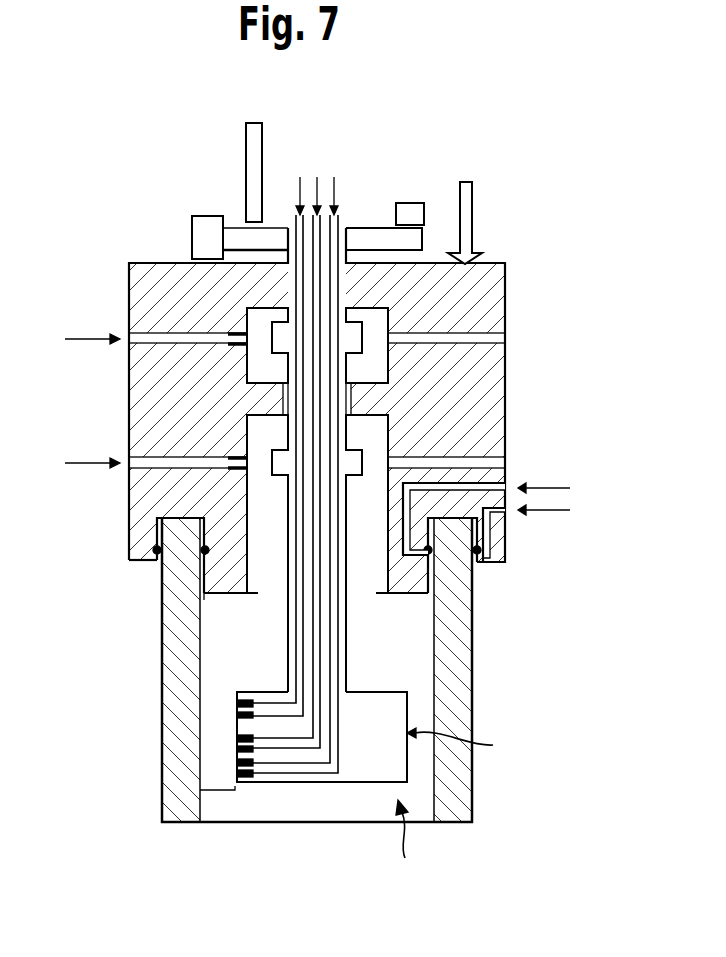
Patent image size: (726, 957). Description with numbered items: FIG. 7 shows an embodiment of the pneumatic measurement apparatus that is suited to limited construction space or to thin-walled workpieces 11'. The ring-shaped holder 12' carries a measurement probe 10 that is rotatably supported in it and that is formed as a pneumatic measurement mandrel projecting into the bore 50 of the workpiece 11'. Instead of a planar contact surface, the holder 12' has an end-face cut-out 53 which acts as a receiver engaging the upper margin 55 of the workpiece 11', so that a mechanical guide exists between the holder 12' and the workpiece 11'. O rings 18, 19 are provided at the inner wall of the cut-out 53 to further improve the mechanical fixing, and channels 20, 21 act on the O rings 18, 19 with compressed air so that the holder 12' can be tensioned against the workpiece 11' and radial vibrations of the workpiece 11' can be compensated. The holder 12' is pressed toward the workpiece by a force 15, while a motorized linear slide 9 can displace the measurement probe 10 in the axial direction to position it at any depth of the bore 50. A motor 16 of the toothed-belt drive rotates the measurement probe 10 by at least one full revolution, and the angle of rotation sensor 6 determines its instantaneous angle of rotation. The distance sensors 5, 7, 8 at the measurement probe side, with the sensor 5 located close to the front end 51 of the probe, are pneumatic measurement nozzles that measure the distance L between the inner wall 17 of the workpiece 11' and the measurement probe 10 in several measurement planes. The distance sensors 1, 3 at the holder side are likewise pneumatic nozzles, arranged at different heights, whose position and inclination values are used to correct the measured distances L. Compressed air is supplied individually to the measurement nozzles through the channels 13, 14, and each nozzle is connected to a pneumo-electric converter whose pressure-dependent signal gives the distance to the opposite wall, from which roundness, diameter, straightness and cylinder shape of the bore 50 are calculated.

The first distance sensor at the holder side 1 is at (230, 334).
The third distance sensor at the holder side 3 is at (230, 458).
The distance sensor at the measurement probe side 5 is at (236, 764).
The angle of rotation sensor 6 is at (410, 215).
The distance sensor at the measurement probe side 7 is at (236, 705).
The distance sensor at the measurement probe side 8 is at (236, 740).
The motorized linear slide 9 is at (253, 128).
The measurement probe 10 is at (380, 698).
The thin-walled workpiece 11' is at (280, 670).
The holder 12' is at (359, 410).
The channel 13 is at (318, 190).
The channel 14 is at (75, 339).
The force 15 is at (468, 186).
The motor 16 is at (207, 228).
The inner wall 17 is at (203, 675).
The O ring 18 is at (155, 550).
The O ring 19 is at (207, 550).
The channel 20 is at (566, 511).
The channel 21 is at (566, 487).
The bore 50 is at (421, 846).
The front end of the measurement probe 51 is at (465, 744).
The end-face cut-out 53 is at (196, 528).
The upper margin of the workpiece 55 is at (455, 510).
The distance L is at (222, 792).